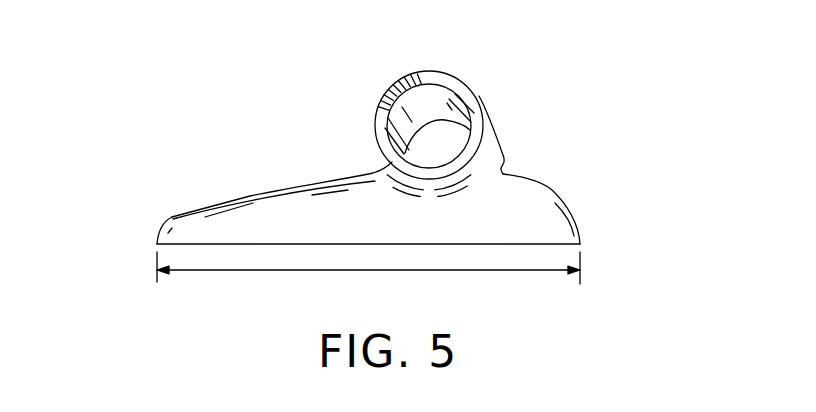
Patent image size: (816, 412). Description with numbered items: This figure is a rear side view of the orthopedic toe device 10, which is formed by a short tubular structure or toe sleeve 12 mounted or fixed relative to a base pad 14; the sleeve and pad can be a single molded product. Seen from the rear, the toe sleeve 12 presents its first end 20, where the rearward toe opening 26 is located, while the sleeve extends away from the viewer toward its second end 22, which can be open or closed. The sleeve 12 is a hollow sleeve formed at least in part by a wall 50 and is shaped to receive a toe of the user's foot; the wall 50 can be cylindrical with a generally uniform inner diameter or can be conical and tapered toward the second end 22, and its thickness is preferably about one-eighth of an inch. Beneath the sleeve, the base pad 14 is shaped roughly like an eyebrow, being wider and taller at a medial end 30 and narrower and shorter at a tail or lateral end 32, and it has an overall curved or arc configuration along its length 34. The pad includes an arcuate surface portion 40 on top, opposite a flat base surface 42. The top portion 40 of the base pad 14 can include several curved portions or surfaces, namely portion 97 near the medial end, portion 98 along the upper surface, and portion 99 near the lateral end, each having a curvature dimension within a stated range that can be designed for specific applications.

The orthopedic toe device 10 is at (578, 87).
The toe sleeve 12 is at (460, 73).
The base pad 14 is at (542, 190).
The first end 20 is at (396, 82).
The second end 22 is at (510, 157).
The toe opening 26 is at (425, 95).
The medial end 30 is at (580, 235).
The lateral end 32 is at (155, 236).
The length 34 is at (358, 270).
The arcuate surface portion 40 is at (300, 183).
The base surface 42 is at (502, 245).
The wall 50 is at (472, 110).
The curved portion 97 is at (573, 207).
The curved portion 98 is at (342, 172).
The curved portion 99 is at (165, 222).